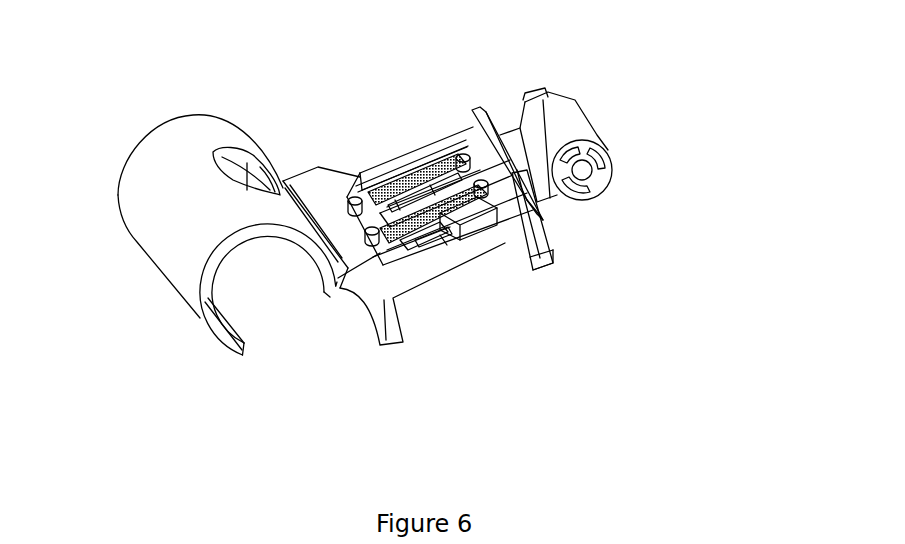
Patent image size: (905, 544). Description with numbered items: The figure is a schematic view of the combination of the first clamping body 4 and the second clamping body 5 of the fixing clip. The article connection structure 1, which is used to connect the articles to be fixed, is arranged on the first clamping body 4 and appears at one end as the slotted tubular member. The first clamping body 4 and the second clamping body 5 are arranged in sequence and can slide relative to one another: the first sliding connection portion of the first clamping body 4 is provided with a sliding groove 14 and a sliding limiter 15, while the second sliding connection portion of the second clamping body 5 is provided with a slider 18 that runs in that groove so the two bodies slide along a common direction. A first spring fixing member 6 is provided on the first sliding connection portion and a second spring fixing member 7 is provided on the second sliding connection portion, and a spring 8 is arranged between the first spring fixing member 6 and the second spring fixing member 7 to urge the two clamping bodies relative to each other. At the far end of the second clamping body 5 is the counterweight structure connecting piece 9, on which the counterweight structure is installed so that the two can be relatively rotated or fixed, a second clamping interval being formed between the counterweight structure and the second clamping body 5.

The article connection structure 1 is at (158, 197).
The first clamping body 4 is at (380, 293).
The second clamping body 5 is at (547, 232).
The first spring fixing member 6 is at (351, 195).
The second spring fixing member 7 is at (468, 125).
The spring 8 is at (429, 177).
The counterweight structure connecting piece 9 is at (545, 128).
The sliding groove 14 is at (470, 220).
The sliding limiter 15 is at (540, 228).
The slider 18 is at (412, 218).